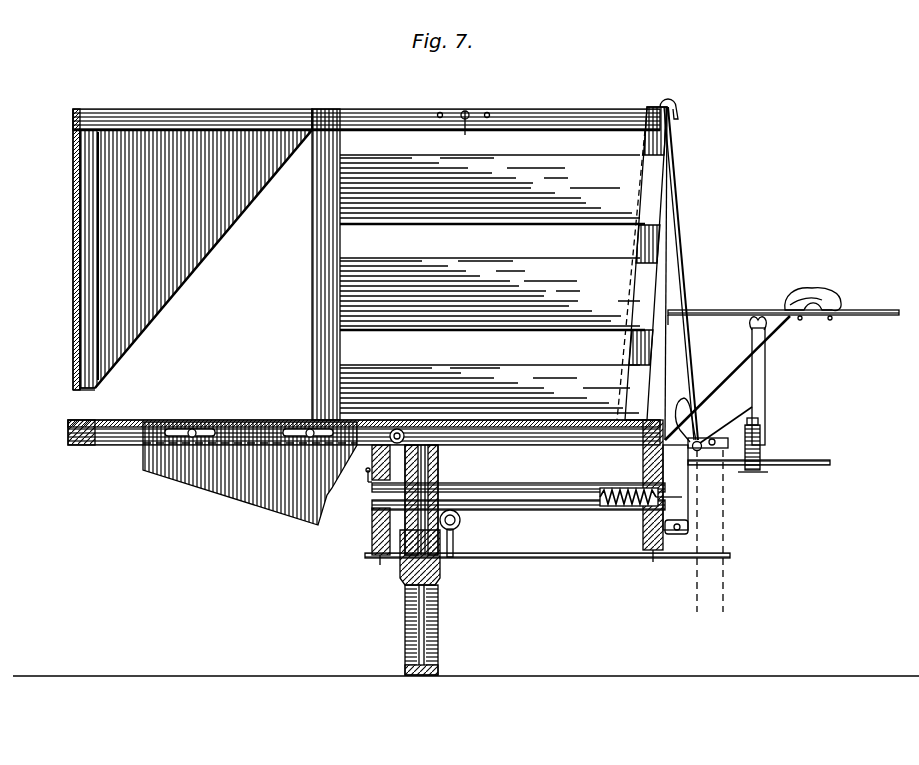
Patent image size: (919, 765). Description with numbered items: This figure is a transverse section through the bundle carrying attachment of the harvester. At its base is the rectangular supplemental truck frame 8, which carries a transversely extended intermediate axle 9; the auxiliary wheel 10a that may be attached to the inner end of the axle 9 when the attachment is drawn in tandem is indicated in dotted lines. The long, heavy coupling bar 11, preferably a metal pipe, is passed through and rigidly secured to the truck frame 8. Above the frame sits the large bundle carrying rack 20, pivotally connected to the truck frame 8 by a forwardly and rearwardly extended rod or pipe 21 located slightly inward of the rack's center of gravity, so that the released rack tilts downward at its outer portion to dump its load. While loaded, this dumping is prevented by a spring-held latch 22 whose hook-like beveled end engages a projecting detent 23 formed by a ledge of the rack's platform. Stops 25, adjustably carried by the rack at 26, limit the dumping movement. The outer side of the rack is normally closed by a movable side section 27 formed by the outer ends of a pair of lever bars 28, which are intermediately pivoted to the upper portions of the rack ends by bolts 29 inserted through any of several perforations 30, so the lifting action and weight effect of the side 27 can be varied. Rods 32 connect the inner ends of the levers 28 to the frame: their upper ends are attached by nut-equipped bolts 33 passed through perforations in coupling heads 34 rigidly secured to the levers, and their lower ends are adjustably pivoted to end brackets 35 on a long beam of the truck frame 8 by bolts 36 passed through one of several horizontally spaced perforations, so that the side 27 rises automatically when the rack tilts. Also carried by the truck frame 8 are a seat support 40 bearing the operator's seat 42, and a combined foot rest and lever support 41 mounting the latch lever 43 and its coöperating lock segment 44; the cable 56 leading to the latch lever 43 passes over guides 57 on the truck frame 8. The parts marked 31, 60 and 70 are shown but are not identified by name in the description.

The supplemental truck frame 8 is at (374, 540).
The intermediate axle 9 is at (525, 559).
The auxiliary wheel 10a is at (718, 603).
The coupling bar 11 is at (461, 522).
The bundle carrying rack 20 is at (345, 240).
The rod or pipe 21 is at (400, 430).
The spring-held latch 22 is at (683, 490).
The projecting detent 23 is at (640, 447).
The stops 25 is at (283, 492).
The adjustable stop mounting 26 is at (193, 430).
The movable side section 27 is at (76, 262).
The lever bars 28 is at (213, 110).
The bolts 29 is at (464, 128).
The perforations 30 is at (486, 113).
The brace 31 is at (200, 245).
The rods 32 is at (687, 300).
The nut-equipped bolts 33 is at (676, 122).
The coupling heads 34 is at (668, 104).
The end brackets 35 is at (697, 452).
The bolts 36 is at (701, 449).
The seat support 40 is at (878, 310).
The combined foot rest and lever support 41 is at (820, 462).
The operator's seat 42 is at (826, 292).
The latch lever 43 is at (766, 392).
The lock segment 44 is at (762, 448).
The cable 56 is at (366, 473).
The guides 57 is at (372, 505).
The hook 60 is at (690, 412).
The shaft 70 is at (441, 625).